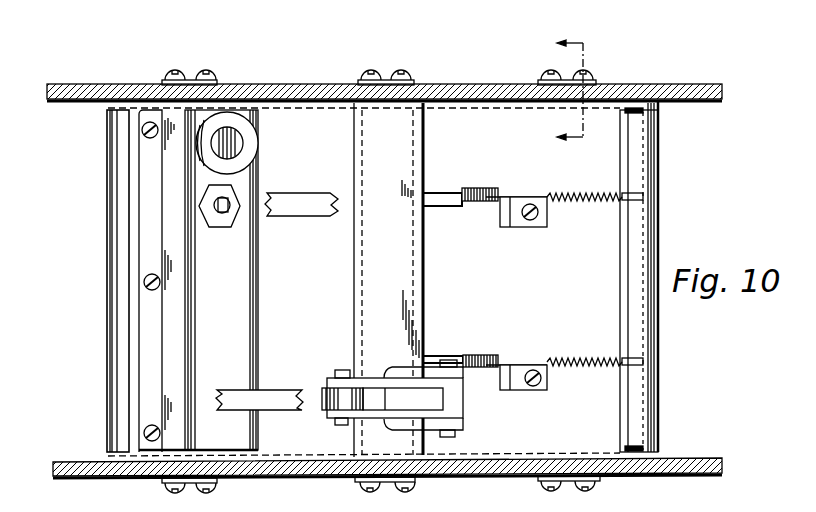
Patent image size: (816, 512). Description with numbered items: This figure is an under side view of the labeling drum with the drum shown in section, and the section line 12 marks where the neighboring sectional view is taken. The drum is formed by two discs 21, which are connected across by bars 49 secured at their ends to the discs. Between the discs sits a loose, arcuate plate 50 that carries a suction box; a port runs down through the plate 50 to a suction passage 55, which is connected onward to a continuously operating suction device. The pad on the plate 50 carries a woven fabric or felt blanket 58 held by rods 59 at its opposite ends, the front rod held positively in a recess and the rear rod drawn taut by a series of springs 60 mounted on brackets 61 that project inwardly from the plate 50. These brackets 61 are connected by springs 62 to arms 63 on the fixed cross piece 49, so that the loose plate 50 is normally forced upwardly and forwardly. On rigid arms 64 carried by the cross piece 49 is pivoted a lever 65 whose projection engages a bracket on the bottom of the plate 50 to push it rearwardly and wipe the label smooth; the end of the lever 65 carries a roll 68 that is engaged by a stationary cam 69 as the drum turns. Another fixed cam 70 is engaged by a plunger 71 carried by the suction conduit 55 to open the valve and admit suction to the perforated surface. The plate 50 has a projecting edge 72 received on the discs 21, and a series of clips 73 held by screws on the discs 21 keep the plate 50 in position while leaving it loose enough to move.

The section line 12- 12 is at (557, 90).
The disc 21 is at (284, 84).
The bar 49 is at (386, 280).
The loose plate 50 is at (254, 280).
The suction passage 55 is at (242, 142).
The blanket 58 is at (108, 183).
The rod 59 is at (660, 167).
The spring 60 is at (600, 202).
The bracket 61 is at (517, 227).
The spring 62 is at (495, 192).
The arm 63 is at (446, 193).
The rigid arm 64 is at (458, 373).
The lever 65 is at (386, 380).
The roll 68 is at (330, 415).
The stationary cam 69 is at (288, 390).
The cam 70 is at (284, 197).
The plunger 71 is at (236, 224).
The projecting edge 72 is at (504, 108).
The clip 73 is at (214, 82).